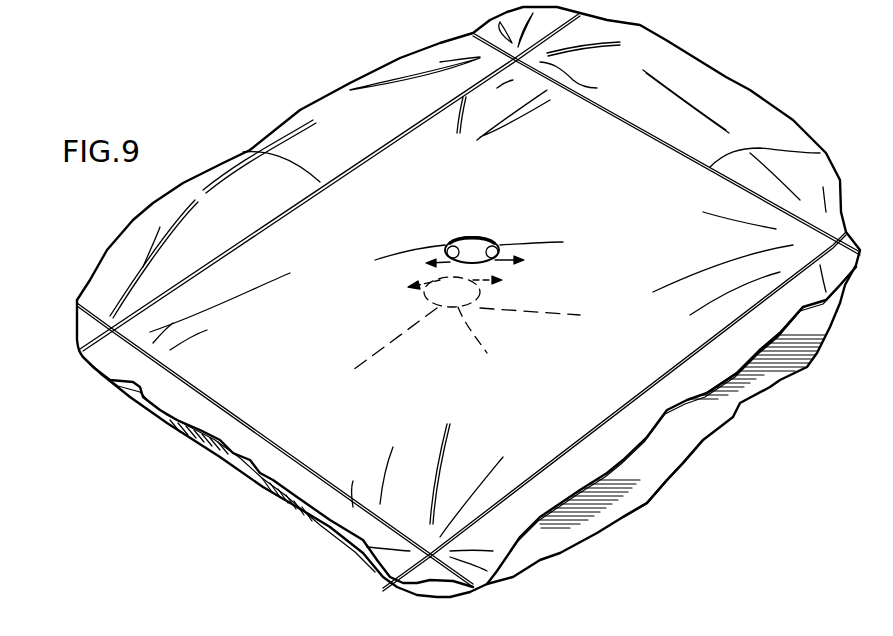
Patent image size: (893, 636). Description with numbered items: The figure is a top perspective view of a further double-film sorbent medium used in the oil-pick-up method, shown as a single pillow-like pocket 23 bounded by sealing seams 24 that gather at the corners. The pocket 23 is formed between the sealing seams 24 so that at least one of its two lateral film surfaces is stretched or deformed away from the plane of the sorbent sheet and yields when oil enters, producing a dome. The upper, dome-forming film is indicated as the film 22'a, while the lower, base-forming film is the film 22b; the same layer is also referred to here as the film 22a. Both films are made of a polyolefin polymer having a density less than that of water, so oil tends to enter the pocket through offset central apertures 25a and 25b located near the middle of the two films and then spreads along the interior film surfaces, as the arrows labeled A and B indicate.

The pocket 23 is at (223, 507).
The sealing seam 24 is at (253, 153).
The central aperture 25a is at (474, 237).
The central aperture 25b is at (478, 331).
The dome-forming film 22'a is at (779, 362).
The folded seam edge 22a is at (758, 353).
The base-forming film 22b is at (683, 474).